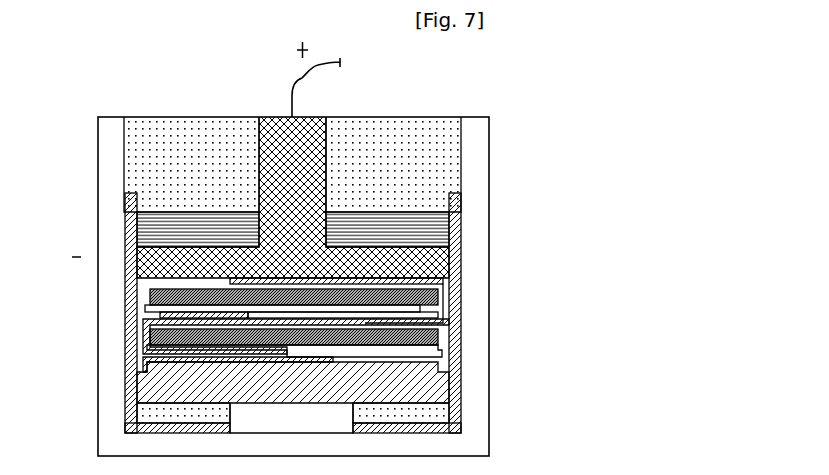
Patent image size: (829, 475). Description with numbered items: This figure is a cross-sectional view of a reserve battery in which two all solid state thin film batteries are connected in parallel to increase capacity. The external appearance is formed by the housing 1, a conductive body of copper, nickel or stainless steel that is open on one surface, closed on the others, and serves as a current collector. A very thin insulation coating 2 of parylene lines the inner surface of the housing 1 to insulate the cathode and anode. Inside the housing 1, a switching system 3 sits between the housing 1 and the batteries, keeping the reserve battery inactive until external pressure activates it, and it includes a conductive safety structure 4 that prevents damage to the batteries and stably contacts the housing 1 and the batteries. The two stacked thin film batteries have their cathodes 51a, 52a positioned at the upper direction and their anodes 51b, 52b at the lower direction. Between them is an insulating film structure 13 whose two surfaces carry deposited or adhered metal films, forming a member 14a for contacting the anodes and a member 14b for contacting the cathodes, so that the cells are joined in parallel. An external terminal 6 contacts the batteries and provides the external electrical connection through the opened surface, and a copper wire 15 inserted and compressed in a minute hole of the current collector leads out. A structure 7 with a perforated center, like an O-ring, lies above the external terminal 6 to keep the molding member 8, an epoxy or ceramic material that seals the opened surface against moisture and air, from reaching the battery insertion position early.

The housing 1 is at (477, 442).
The insulation coating 2 is at (453, 398).
The switching system 3 is at (438, 413).
The safety structure 4 is at (423, 375).
The external terminal 6 is at (450, 262).
The structure having a perforated center 7 is at (450, 225).
The molding member 8 is at (440, 166).
The insulating film structure 13 is at (440, 313).
The member for contacting the anodes 14a is at (148, 357).
The member for contacting the cathodes 14b is at (443, 286).
The copper wire 15 is at (302, 78).
The cathode 51a is at (440, 335).
The anode 51b is at (443, 357).
The cathode 52a is at (148, 294).
The anode 52b is at (150, 309).